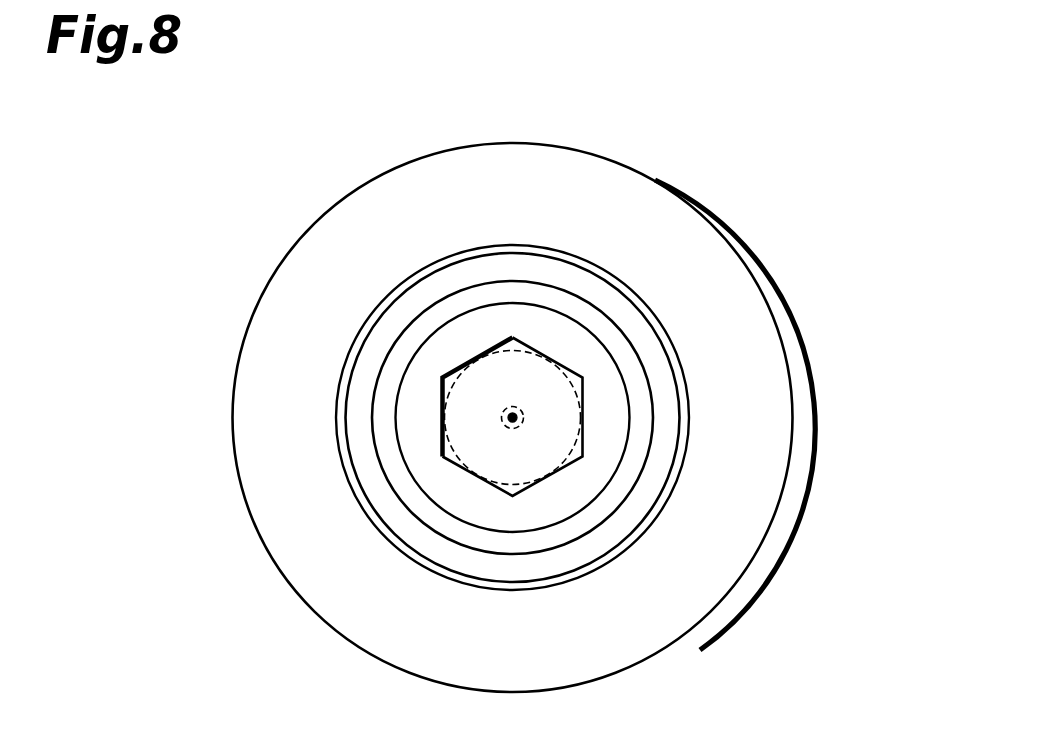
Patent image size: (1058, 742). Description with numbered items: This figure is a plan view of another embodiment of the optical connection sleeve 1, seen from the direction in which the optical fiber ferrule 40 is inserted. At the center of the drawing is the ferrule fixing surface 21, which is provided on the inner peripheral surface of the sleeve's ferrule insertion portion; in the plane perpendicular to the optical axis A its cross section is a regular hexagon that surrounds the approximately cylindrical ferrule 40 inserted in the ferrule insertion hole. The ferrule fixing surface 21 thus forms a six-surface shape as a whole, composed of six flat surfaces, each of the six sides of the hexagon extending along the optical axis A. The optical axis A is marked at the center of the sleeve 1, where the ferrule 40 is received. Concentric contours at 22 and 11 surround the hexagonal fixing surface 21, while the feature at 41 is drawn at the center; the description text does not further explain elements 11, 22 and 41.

The optical connection sleeve 1 is at (677, 175).
The body portion 11 is at (617, 472).
The ferrule fixing surface 21 is at (585, 390).
The head end face 22 is at (570, 340).
The optical fiber ferrule 40 is at (450, 388).
The center of hexagonal hole 41 is at (510, 408).
The optical axis A is at (498, 414).